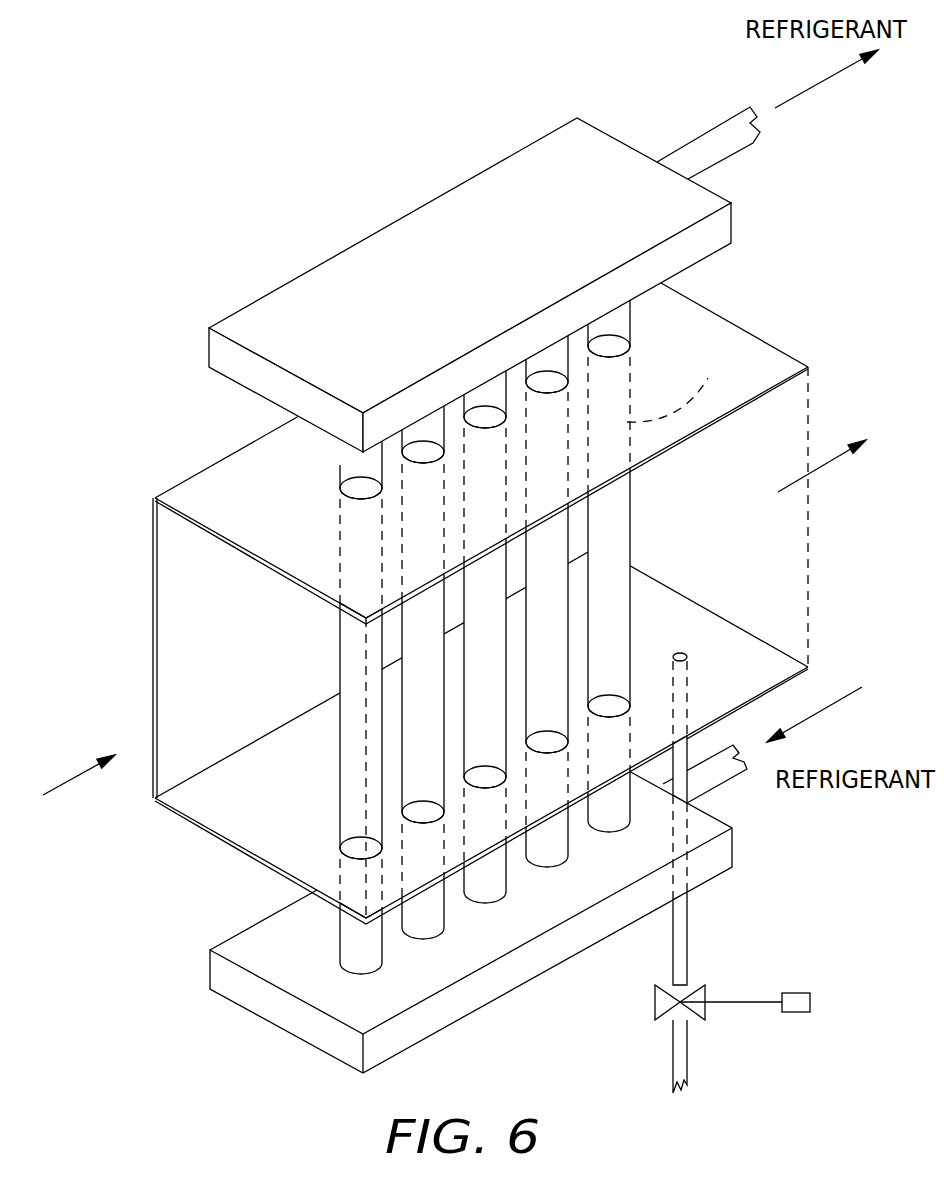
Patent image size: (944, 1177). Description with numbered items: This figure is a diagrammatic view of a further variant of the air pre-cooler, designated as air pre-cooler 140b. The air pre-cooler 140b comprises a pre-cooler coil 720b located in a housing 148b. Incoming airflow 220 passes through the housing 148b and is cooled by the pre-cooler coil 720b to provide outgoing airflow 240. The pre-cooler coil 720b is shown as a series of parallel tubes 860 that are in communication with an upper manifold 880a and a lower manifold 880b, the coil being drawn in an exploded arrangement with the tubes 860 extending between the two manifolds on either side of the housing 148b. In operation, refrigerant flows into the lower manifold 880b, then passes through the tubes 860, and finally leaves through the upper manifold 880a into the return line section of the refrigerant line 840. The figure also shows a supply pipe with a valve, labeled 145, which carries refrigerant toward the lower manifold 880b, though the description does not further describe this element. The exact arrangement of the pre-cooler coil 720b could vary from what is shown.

The air pre-cooler 140b is at (298, 228).
The upper manifold 880a is at (532, 256).
The lower manifold 880b is at (280, 1007).
The refrigerant line 840 is at (718, 122).
The parallel tubes 860 is at (685, 387).
The outgoing airflow 240 is at (928, 416).
The incoming airflow 220 is at (109, 837).
The housing 148b is at (275, 503).
The pre-cooler coil 720b is at (352, 768).
The refrigerant supply pipe with valve 145 is at (690, 947).